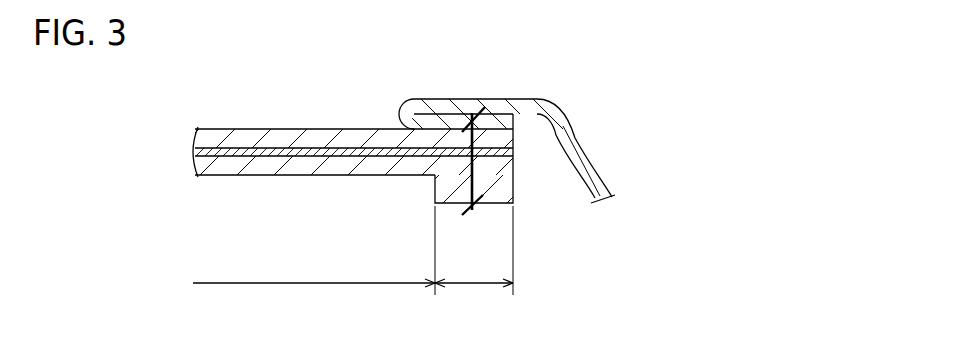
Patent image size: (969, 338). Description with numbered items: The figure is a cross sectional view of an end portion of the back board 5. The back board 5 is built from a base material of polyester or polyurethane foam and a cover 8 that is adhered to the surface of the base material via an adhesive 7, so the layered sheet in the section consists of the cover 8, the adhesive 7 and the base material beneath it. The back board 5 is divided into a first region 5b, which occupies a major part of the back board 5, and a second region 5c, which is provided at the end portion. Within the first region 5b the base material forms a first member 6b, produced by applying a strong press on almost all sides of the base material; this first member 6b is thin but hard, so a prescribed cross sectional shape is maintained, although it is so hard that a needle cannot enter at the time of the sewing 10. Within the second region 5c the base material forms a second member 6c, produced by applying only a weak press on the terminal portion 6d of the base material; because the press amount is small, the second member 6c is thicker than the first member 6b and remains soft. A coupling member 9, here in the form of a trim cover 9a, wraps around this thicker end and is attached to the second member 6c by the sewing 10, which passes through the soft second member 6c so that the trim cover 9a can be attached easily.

The back board 5 is at (437, 132).
The first region 5b is at (314, 298).
The second region 5c is at (474, 298).
The first member 6b is at (360, 152).
The second member 6c is at (505, 188).
The terminal portion 6d is at (504, 174).
The adhesive 7 is at (273, 156).
The cover 8 is at (342, 131).
The coupling member 9 is at (543, 151).
The trim cover 9a is at (586, 152).
The sewing 10 is at (471, 180).